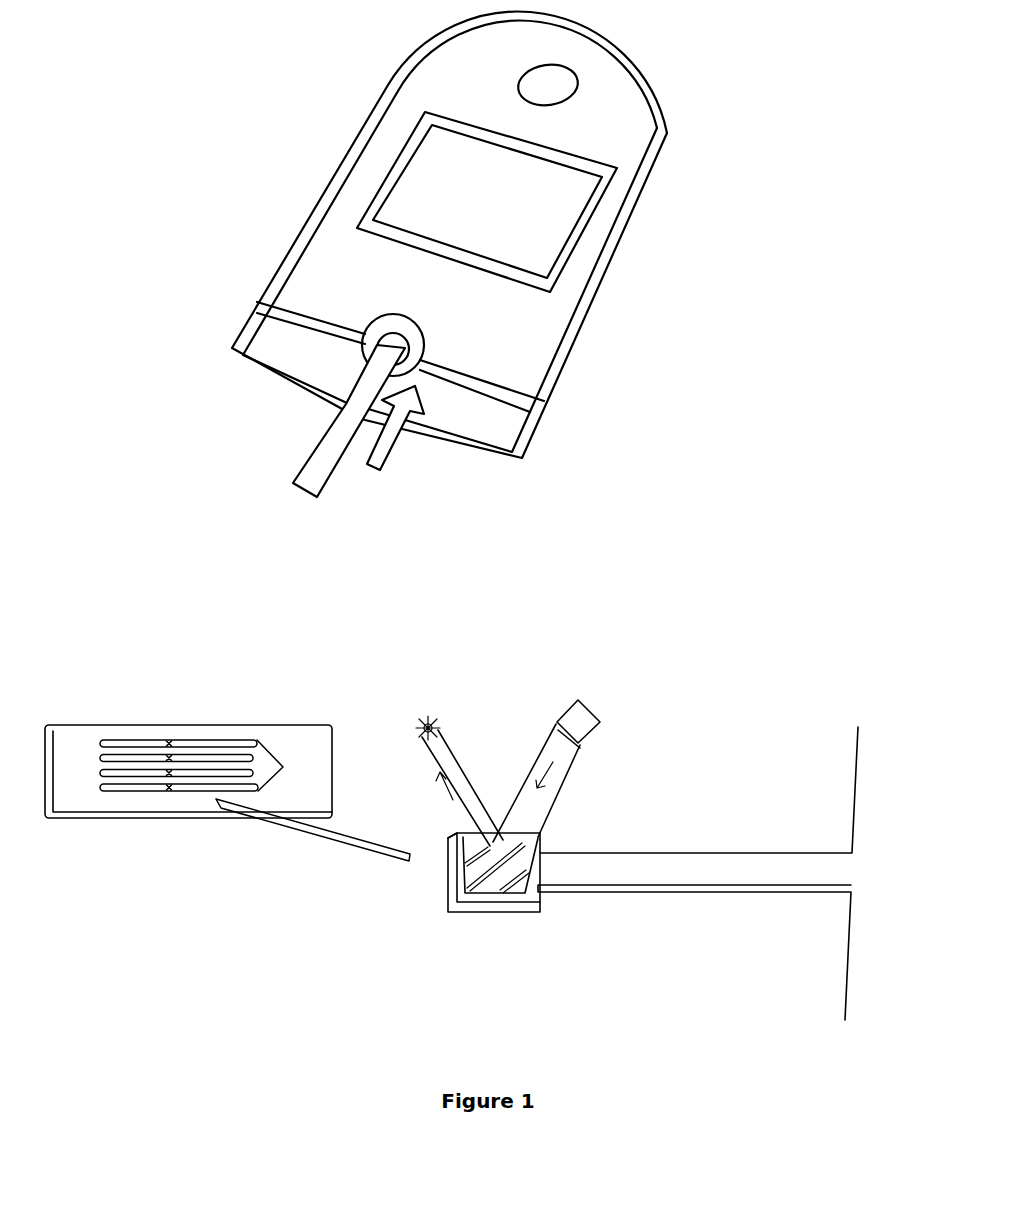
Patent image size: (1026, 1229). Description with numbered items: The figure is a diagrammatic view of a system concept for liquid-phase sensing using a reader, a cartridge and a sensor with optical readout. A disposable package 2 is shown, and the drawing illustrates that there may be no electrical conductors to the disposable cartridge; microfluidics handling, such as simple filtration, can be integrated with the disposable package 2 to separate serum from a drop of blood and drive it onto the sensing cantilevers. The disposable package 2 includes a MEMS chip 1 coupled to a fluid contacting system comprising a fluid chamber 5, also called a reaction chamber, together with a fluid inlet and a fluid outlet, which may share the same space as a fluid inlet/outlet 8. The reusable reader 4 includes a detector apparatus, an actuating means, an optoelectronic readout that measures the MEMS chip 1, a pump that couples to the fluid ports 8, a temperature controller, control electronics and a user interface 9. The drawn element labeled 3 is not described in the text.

The MEMS chip 1 is at (577, 858).
The disposable package 2 is at (240, 831).
The test strip 3 is at (107, 813).
The reader 4 is at (522, 458).
The fluid chamber 5 is at (210, 770).
The fluid inlet/outlet 8 is at (297, 772).
The user interface 9 is at (543, 215).